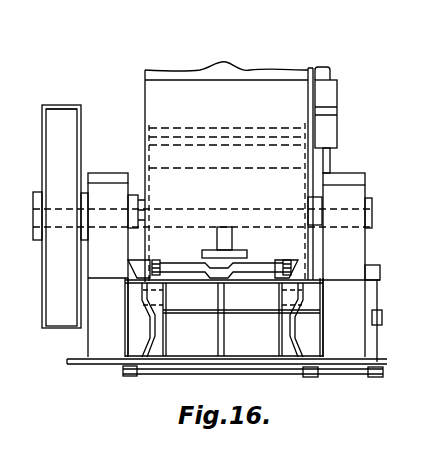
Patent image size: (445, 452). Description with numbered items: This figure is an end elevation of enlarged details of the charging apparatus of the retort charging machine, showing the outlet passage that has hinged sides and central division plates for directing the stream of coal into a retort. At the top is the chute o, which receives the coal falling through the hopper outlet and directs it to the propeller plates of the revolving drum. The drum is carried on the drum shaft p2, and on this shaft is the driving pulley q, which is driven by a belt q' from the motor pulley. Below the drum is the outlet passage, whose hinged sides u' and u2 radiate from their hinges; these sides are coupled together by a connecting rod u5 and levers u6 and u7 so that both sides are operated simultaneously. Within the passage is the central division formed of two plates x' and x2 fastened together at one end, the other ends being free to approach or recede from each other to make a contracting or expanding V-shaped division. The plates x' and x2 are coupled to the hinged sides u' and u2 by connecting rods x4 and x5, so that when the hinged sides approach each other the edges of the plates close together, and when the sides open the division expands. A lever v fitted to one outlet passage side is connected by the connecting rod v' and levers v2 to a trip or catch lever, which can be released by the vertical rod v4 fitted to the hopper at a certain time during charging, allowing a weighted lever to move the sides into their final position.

The driving pulley q is at (65, 213).
The belt q' is at (61, 91).
The chute o is at (229, 172).
The vertical rod v4 is at (331, 71).
The drum shaft p2 is at (372, 212).
The connecting rod x4 is at (182, 265).
The connecting rod x5 is at (262, 265).
The division plate x2 is at (225, 331).
The division plate x' is at (205, 319).
The hinged side u2 is at (165, 327).
The hinged side u' is at (310, 320).
The connecting rod u5 is at (227, 374).
The lever u6 is at (303, 370).
The lever u7 is at (123, 368).
The lever v is at (358, 380).
The connecting rod v' is at (382, 313).
The levers v2 is at (382, 303).